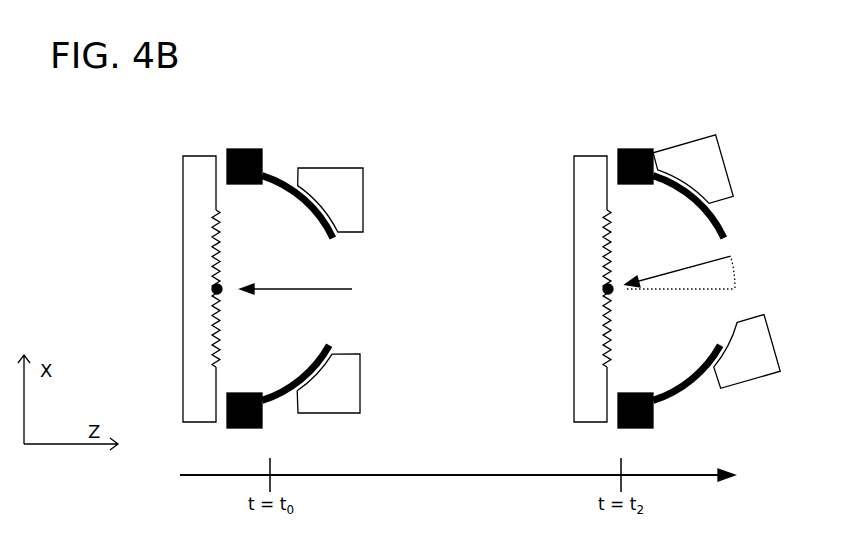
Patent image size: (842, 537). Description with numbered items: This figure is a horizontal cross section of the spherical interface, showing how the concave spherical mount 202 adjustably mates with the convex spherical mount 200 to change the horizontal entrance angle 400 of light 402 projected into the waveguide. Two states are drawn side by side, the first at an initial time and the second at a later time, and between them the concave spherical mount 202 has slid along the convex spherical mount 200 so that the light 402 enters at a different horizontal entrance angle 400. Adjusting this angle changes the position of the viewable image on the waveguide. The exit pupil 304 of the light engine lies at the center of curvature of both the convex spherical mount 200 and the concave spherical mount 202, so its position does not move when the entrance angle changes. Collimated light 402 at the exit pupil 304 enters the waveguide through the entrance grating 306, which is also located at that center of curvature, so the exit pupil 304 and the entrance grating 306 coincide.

The convex spherical mount 200 is at (252, 146).
The concave spherical mount 202 is at (348, 158).
The exit pupil 304 is at (198, 292).
The entrance grating 306 is at (211, 248).
The horizontal entrance angle 400 is at (750, 277).
The light 402 is at (306, 298).